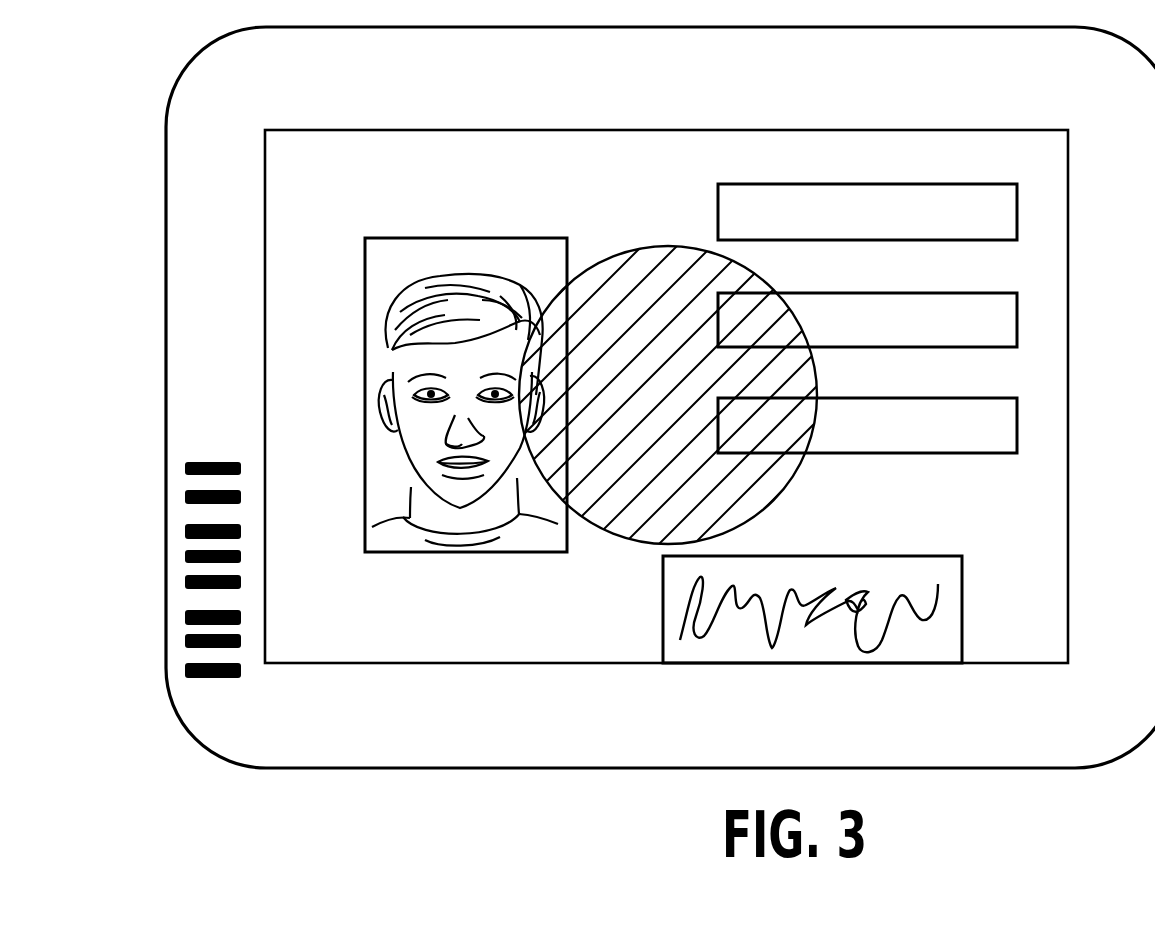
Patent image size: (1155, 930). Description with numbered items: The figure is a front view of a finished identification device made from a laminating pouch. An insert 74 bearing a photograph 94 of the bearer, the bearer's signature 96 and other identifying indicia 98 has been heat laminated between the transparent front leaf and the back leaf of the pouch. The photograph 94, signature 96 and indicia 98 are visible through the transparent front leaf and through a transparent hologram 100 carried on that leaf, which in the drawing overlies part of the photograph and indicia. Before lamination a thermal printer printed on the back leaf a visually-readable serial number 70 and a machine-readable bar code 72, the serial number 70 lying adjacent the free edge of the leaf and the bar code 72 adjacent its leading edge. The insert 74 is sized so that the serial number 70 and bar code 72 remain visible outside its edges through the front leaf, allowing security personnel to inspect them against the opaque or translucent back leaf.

The serial number 70 is at (418, 628).
The bar code 72 is at (185, 617).
The insert 74 is at (1068, 482).
The photograph 94 is at (385, 370).
The signature 96 is at (962, 617).
The identifying indicia 98 is at (1018, 428).
The hologram 100 is at (654, 258).